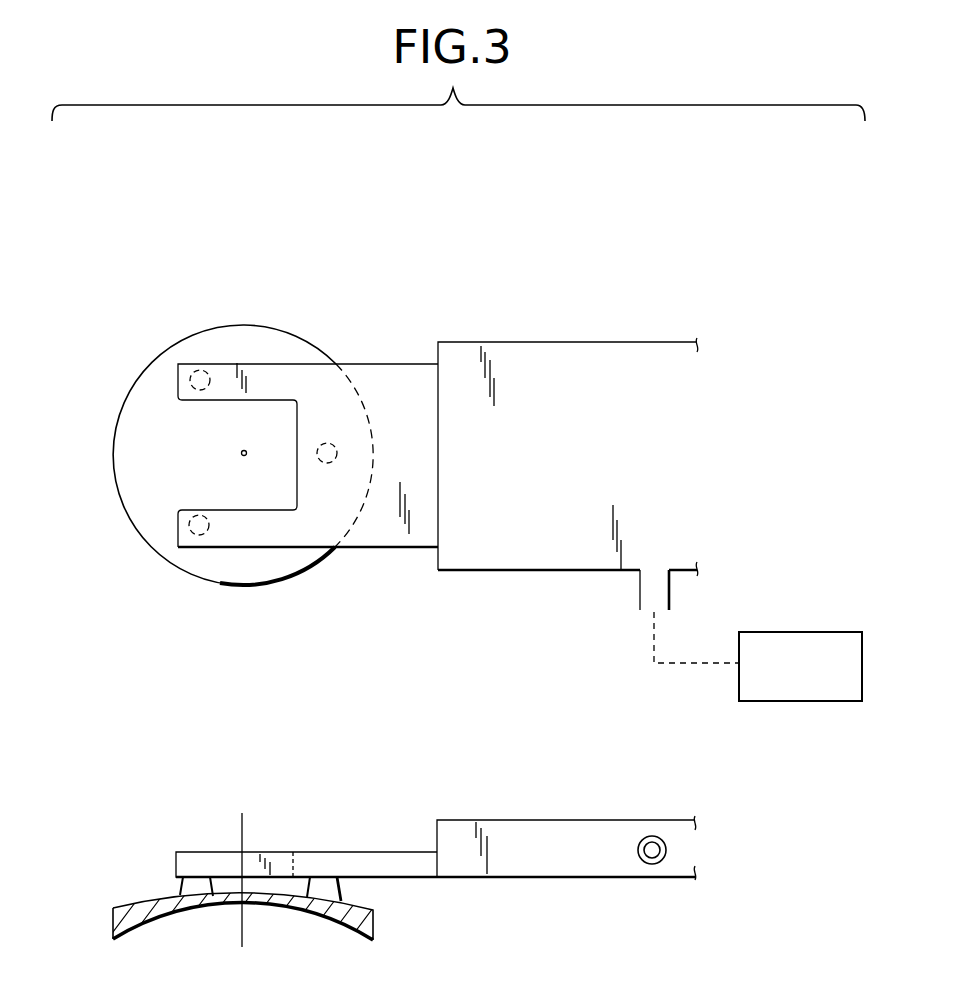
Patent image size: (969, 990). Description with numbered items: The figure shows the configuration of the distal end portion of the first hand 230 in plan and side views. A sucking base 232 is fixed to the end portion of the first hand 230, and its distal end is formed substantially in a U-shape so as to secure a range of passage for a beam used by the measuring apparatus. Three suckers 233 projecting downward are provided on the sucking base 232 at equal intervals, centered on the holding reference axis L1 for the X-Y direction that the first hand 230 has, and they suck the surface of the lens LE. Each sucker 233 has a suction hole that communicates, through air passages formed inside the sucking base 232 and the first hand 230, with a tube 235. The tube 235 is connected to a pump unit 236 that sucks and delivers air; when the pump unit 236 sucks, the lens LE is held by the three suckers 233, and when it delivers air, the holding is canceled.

The first hand 230 is at (621, 342).
The sucking base 232 is at (391, 364).
The suckers 233 is at (200, 371).
The tube 235 is at (640, 595).
The pump unit 236 is at (848, 632).
The lens LE is at (262, 326).
The holding reference axis L1 is at (242, 453).